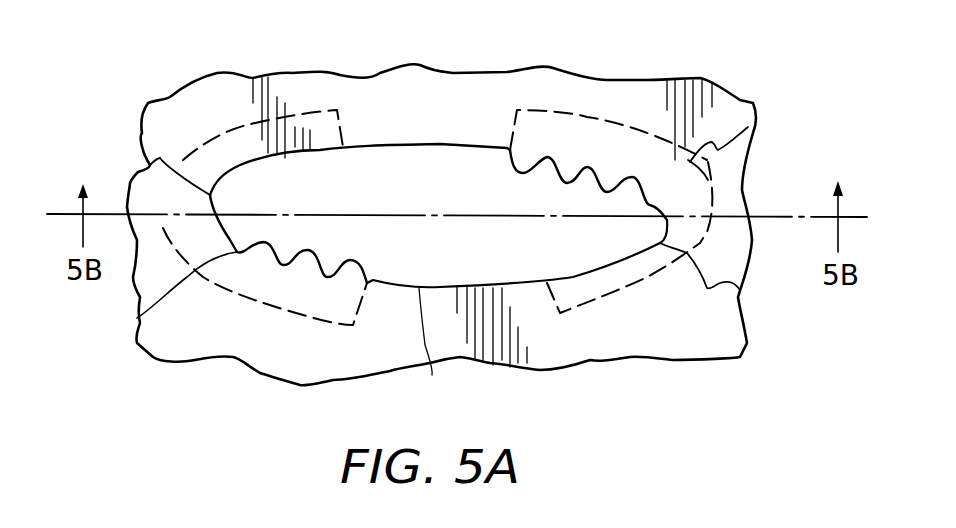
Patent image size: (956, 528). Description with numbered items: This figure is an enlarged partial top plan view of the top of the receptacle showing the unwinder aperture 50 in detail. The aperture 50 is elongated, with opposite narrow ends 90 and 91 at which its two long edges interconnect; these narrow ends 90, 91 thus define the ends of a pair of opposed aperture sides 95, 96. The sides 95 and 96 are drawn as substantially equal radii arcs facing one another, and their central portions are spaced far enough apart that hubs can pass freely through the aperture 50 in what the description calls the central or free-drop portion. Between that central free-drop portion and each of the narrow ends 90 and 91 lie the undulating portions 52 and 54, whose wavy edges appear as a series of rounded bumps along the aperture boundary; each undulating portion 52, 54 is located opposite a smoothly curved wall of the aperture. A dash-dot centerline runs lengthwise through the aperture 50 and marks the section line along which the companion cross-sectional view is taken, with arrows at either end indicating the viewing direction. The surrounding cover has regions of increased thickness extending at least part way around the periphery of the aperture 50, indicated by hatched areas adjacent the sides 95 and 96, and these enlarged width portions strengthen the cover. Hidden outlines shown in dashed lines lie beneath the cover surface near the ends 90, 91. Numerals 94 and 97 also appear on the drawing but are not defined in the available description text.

The unwinder aperture 50 is at (480, 137).
The undulating portion 52 is at (600, 176).
The undulating portion 54 is at (137, 318).
The narrow end 90 is at (740, 290).
The narrow end 91 is at (150, 165).
The fold line 94 is at (378, 214).
The aperture side 95 is at (412, 145).
The aperture side 96 is at (432, 375).
The upper right flap 97 is at (668, 182).